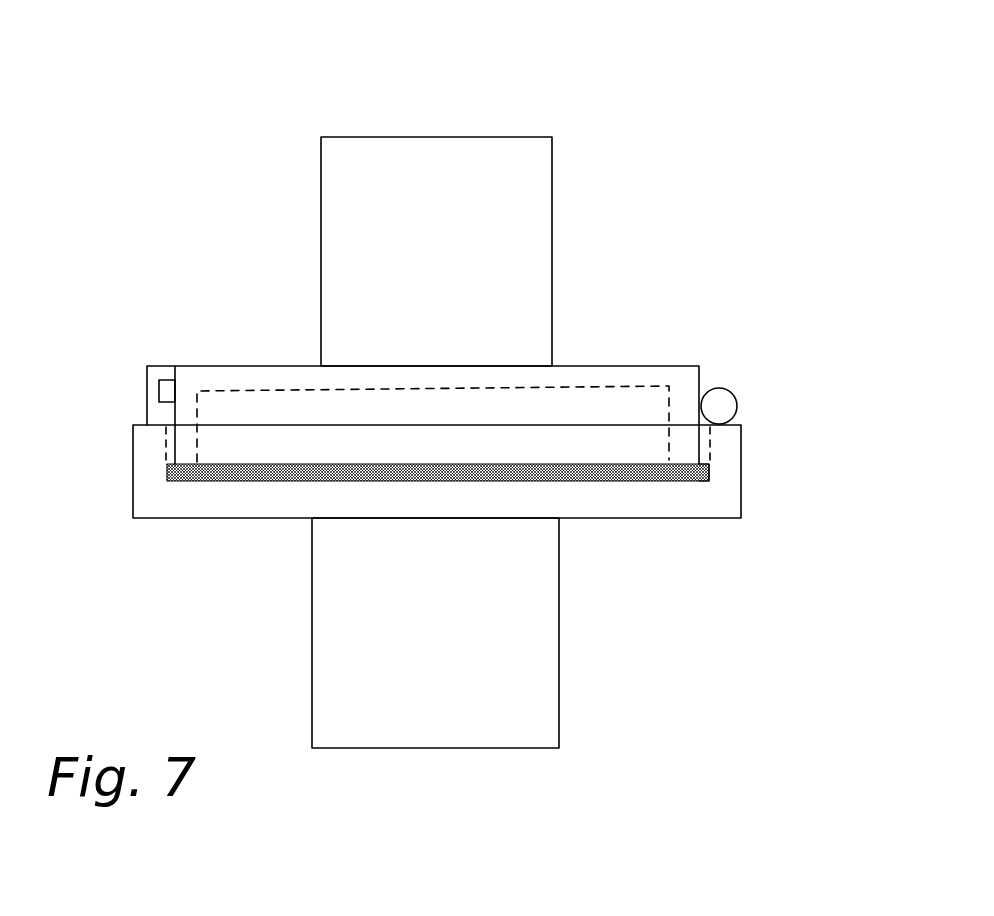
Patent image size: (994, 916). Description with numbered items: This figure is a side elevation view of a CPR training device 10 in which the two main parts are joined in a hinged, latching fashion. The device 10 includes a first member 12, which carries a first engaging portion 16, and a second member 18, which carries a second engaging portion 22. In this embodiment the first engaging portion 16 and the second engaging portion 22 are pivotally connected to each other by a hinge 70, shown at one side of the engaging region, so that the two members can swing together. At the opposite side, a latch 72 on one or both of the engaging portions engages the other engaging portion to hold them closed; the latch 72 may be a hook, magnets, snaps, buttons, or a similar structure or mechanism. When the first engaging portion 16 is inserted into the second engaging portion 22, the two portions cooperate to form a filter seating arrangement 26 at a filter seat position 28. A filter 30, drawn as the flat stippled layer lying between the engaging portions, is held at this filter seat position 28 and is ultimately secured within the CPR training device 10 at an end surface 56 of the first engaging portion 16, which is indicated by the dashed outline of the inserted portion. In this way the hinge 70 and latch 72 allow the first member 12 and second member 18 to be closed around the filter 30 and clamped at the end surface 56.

The CPR training device 10 is at (785, 86).
The first member 12 is at (684, 226).
The first engaging portion 16 is at (680, 445).
The second member 18 is at (742, 594).
The second engaging portion 22 is at (728, 455).
The filter seating arrangement 26 is at (141, 469).
The filter seat position 28 is at (168, 470).
The filter 30 is at (695, 475).
The end surface 56 is at (187, 465).
The hinge 70 is at (723, 398).
The latch 72 is at (152, 397).